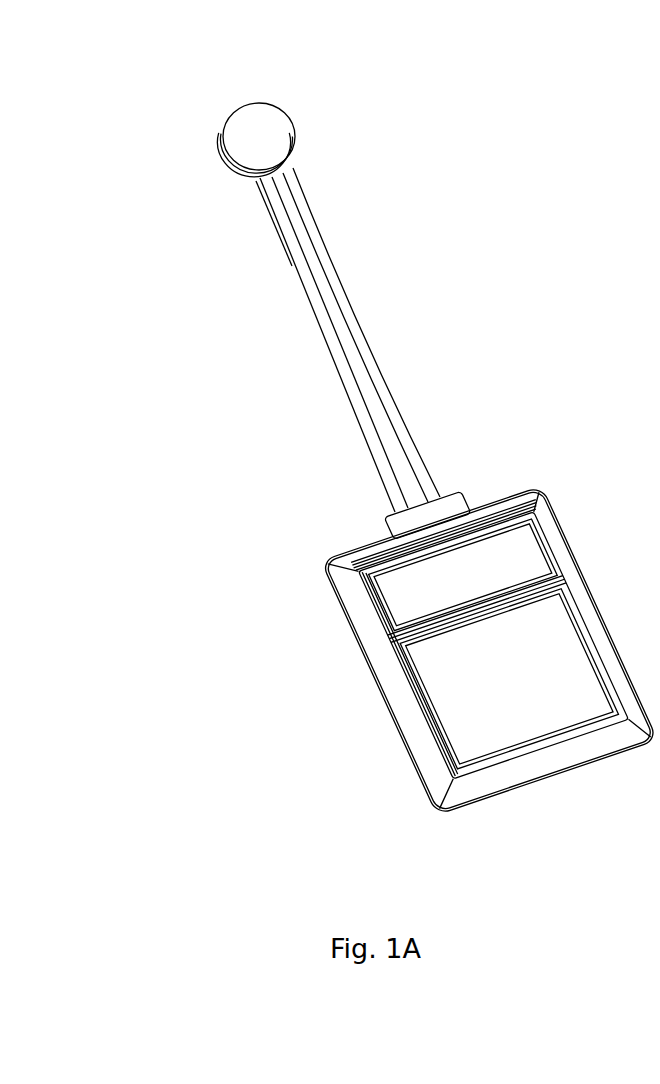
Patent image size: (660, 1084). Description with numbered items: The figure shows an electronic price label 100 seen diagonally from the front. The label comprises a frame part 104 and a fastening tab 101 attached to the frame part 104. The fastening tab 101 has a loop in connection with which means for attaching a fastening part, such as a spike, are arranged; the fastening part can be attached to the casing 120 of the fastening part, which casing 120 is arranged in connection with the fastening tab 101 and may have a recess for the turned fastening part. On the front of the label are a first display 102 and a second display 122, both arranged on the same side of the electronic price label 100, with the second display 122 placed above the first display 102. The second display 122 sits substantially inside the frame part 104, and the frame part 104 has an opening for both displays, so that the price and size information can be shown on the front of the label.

The electronic price tag assembly 100 is at (190, 78).
The fastening tab 101 is at (383, 382).
The first display 102 is at (428, 658).
The frame part 104 is at (438, 760).
The casing of the fastening part 120 is at (280, 140).
The second display 122 is at (507, 555).